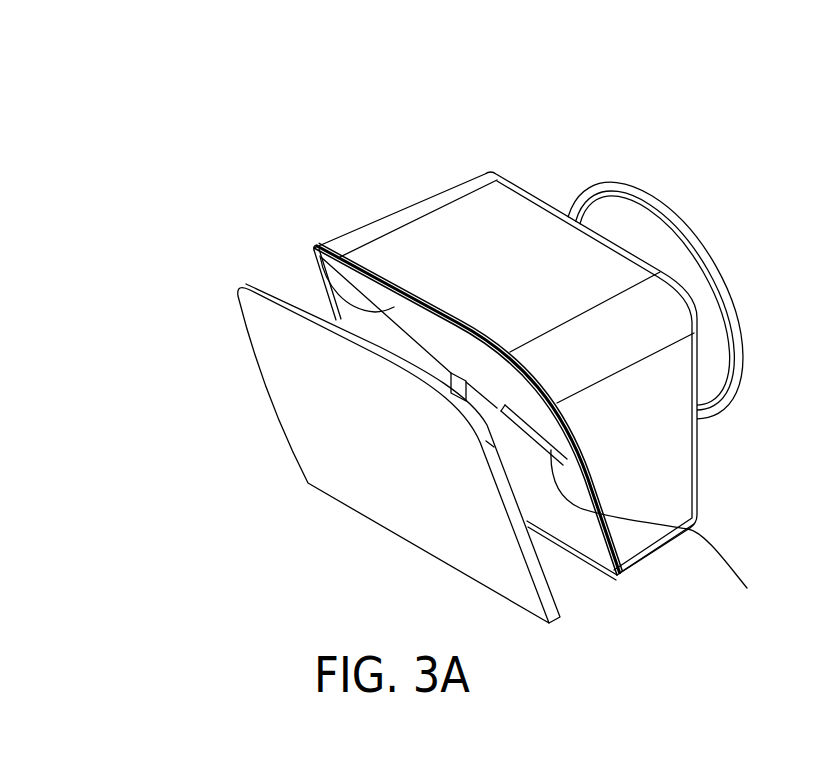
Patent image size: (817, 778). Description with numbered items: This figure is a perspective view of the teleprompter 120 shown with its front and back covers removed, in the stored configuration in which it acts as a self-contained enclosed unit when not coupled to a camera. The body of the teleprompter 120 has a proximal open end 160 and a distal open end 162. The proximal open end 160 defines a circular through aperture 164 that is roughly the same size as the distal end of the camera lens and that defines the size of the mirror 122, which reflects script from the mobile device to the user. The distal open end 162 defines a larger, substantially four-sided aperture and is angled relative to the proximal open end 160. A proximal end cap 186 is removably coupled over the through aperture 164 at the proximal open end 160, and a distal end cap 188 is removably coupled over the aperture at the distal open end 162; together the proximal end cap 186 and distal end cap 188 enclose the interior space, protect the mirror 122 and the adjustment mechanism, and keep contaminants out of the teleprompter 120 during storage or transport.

The teleprompter 120 is at (492, 343).
The mirror 122 is at (314, 248).
The proximal open end 160 is at (706, 486).
The distal open end 162 is at (598, 559).
The through aperture 164 is at (665, 526).
The proximal end cap 186 is at (623, 218).
The distal end cap 188 is at (281, 331).